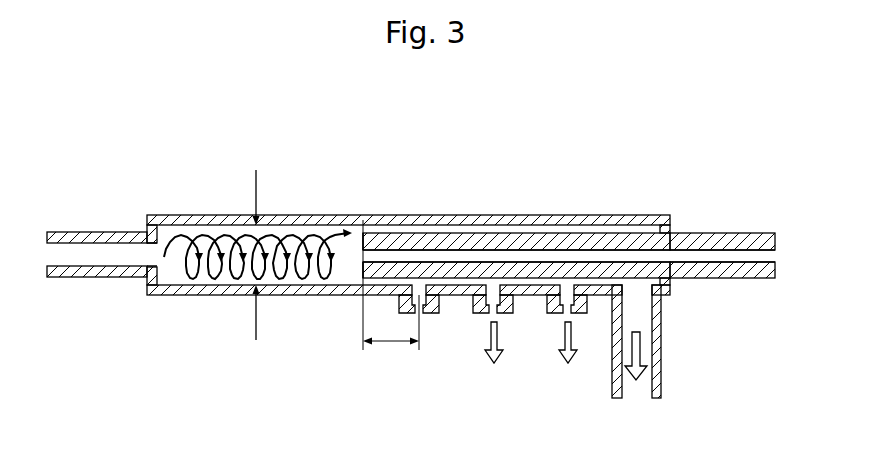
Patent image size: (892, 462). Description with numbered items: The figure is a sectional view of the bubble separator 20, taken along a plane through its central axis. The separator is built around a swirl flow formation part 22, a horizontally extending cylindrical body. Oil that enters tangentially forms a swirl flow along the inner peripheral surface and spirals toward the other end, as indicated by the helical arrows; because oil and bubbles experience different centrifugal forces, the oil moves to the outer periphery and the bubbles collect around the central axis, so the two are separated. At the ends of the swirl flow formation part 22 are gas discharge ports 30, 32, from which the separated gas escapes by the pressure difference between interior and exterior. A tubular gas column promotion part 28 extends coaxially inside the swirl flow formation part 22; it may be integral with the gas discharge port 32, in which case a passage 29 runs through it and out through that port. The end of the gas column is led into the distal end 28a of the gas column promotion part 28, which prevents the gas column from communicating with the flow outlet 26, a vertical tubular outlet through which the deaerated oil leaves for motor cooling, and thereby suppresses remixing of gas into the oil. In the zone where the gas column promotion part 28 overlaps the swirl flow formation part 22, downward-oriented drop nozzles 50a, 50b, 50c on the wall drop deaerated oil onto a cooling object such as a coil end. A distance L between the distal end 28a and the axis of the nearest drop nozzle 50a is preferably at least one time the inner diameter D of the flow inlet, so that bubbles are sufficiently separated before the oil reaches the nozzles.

The bubble separator 20 is at (340, 138).
The swirl flow formation part 22 is at (428, 215).
The flow outlet 26 is at (662, 348).
The gas column promotion part 28 is at (510, 240).
The distal end of the gas column promotion part 28a is at (363, 215).
The passage 29 is at (685, 255).
The gas discharge port 30 is at (80, 278).
The gas discharge port 32 is at (748, 233).
The drop nozzle 50a is at (421, 313).
The drop nozzle 50b is at (477, 313).
The drop nozzle 50c is at (553, 313).
The inner diameter of the flow inlet D is at (257, 241).
The distance L is at (391, 299).